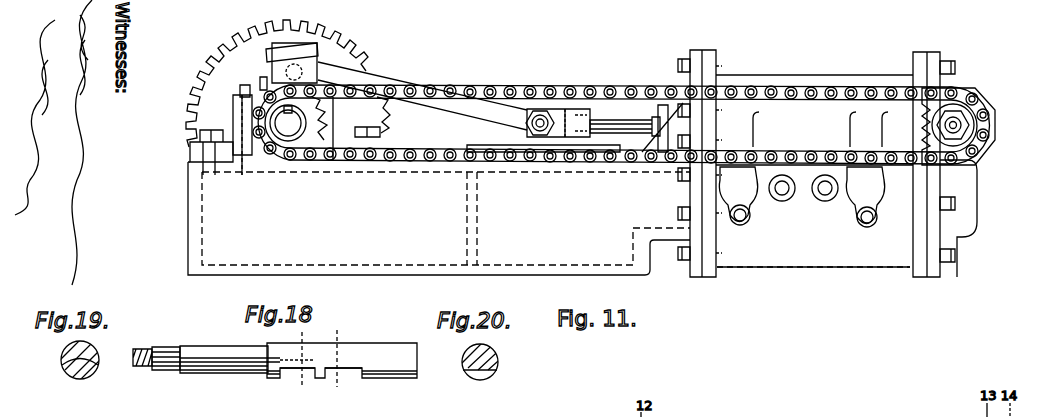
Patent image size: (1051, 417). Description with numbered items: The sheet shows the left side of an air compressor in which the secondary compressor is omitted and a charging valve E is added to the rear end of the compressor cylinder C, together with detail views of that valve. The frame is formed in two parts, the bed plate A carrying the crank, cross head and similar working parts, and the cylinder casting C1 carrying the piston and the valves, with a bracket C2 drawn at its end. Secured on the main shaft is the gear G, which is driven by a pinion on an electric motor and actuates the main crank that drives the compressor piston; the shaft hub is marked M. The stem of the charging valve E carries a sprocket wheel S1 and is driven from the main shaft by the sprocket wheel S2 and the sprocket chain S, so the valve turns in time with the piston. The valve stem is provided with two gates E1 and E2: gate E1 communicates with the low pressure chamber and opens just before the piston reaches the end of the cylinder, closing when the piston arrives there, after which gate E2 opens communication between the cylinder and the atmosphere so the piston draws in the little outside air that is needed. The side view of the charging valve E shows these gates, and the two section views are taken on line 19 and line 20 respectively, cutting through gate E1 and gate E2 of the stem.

In FIG. 11, the gear G is at (241, 61).
In FIG. 11, the motor shaft hub M is at (282, 124).
In FIG. 11, the sprocket wheel S2 is at (313, 125).
In FIG. 11, the sprocket chain S is at (540, 92).
In FIG. 11, the compressor cylinder C is at (815, 82).
In FIG. 11, the sprocket wheel S1 is at (932, 110).
In FIG. 11, the charging valve E is at (960, 125).
In FIG. 19, the charging valve E is at (62, 356).
In FIG. 20, the charging valve E is at (493, 348).
In FIG. 18, the charging valve E is at (392, 346).
In FIG. 11, the bracket C2 is at (958, 182).
In FIG. 11, the cylinder casting C1 is at (814, 216).
In FIG. 11, the bed plate A is at (439, 218).
In FIG. 19, the gate E1 is at (80, 372).
In FIG. 18, the gate E1 is at (290, 372).
In FIG. 20, the gate E2 is at (484, 377).
In FIG. 18, the gate E2 is at (355, 372).
In FIG. 18, the section line 19 is at (300, 361).
In FIG. 18, the section line 20 is at (339, 360).